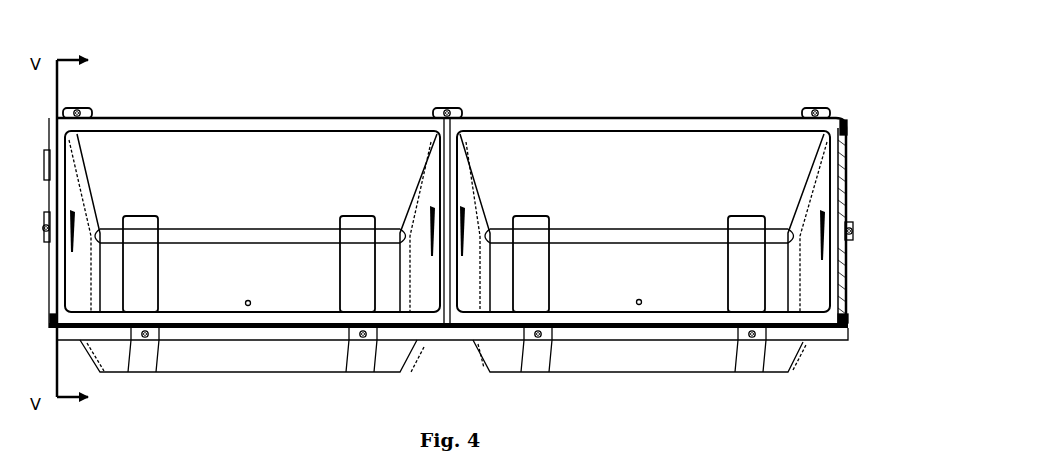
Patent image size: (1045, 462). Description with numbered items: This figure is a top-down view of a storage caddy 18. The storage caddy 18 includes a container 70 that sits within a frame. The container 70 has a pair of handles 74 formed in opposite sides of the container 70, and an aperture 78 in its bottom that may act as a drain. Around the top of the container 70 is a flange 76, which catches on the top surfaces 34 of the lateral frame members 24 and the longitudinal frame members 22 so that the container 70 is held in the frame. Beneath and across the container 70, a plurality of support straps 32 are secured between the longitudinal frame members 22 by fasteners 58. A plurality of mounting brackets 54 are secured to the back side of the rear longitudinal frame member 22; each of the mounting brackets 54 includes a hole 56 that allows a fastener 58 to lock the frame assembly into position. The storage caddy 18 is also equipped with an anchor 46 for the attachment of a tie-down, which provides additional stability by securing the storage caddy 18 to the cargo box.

The storage caddy 18 is at (641, 76).
The longitudinal frame members 22 is at (800, 333).
The lateral frame members 24 is at (843, 135).
The support straps 32 is at (143, 347).
The top surfaces 34 is at (843, 290).
The anchor 46 is at (850, 224).
The mounting brackets 54 is at (438, 110).
The hole 56 is at (813, 110).
The fasteners 58 is at (753, 340).
The container 70 is at (336, 170).
The handles 74 is at (459, 213).
The flange 76 is at (707, 122).
The aperture 78 is at (247, 300).